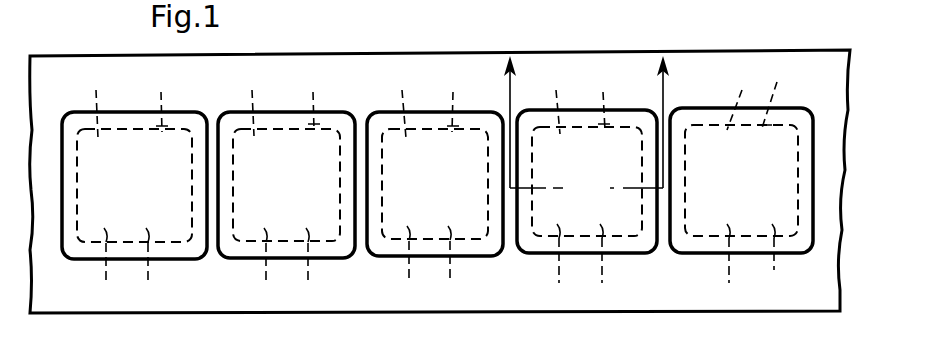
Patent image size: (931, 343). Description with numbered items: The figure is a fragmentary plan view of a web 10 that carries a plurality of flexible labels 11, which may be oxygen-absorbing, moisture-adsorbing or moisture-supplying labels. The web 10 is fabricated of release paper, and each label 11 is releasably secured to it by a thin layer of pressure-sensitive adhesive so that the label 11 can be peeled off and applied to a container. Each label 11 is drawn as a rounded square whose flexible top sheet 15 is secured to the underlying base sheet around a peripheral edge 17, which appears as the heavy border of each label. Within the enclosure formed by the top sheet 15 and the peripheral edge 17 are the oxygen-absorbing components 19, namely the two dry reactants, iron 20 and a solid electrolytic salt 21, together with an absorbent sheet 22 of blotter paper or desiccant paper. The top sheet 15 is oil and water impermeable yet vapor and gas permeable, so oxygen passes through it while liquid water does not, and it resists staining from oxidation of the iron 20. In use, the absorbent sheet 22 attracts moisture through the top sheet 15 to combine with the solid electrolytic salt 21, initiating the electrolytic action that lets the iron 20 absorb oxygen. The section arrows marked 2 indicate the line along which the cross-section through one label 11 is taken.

The section line 2- 2 is at (587, 122).
The web 10 is at (765, 50).
The flexible label 11 is at (232, 258).
The top sheet 15 is at (122, 172).
The peripheral edge 17 is at (88, 261).
The oxygen-absorbing components 19 is at (161, 90).
The iron 20 is at (414, 265).
The solid electrolytic salt 21 is at (789, 282).
The absorbent sheet 22 is at (92, 87).